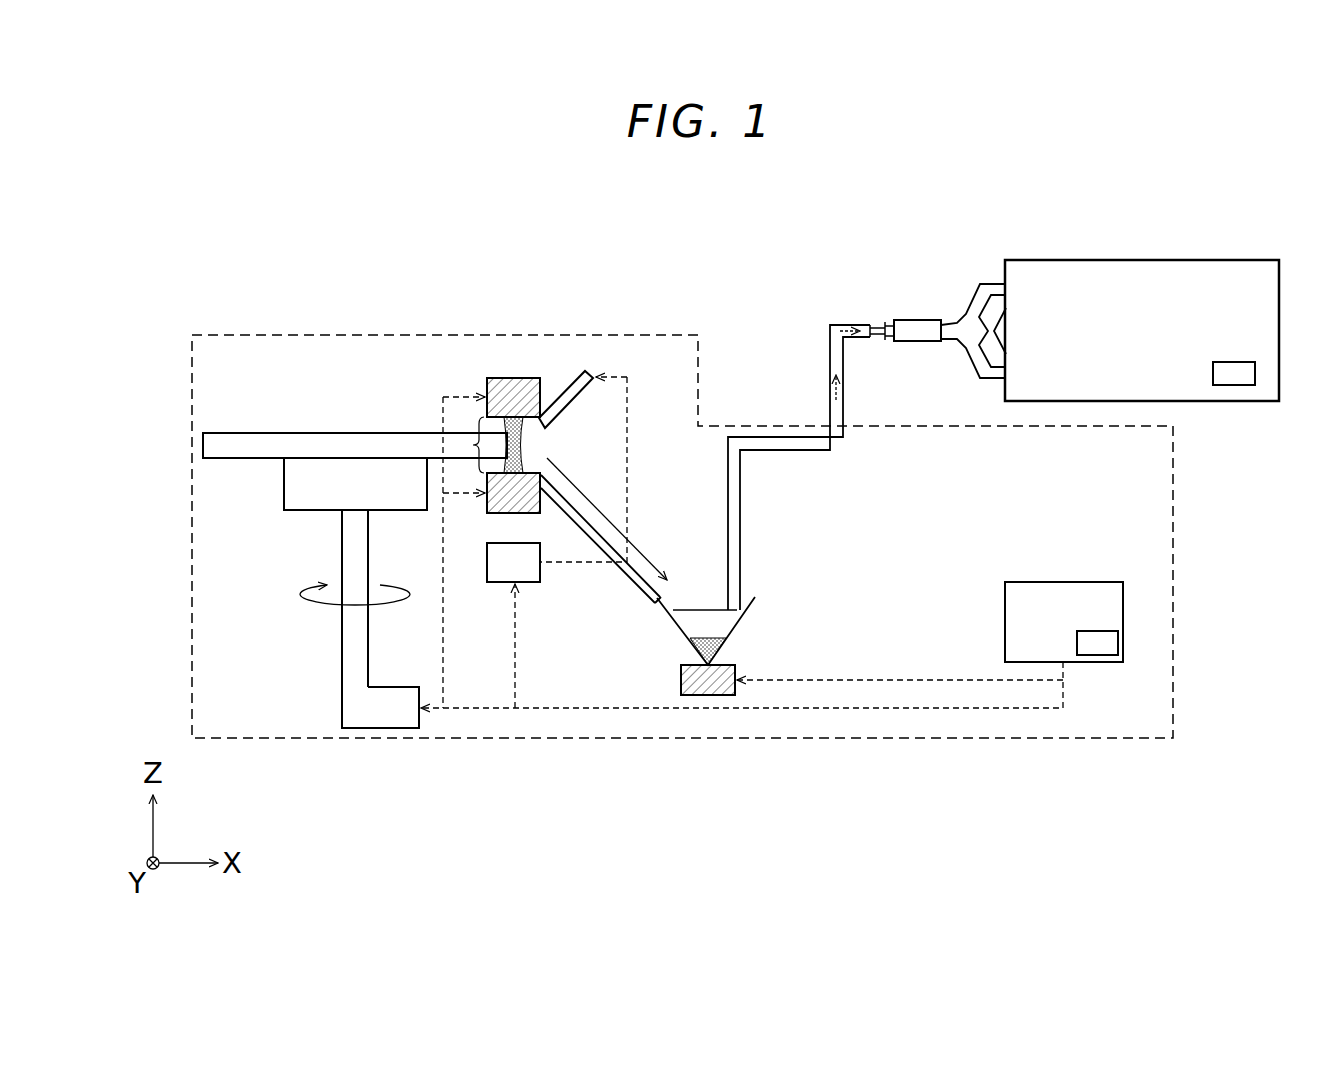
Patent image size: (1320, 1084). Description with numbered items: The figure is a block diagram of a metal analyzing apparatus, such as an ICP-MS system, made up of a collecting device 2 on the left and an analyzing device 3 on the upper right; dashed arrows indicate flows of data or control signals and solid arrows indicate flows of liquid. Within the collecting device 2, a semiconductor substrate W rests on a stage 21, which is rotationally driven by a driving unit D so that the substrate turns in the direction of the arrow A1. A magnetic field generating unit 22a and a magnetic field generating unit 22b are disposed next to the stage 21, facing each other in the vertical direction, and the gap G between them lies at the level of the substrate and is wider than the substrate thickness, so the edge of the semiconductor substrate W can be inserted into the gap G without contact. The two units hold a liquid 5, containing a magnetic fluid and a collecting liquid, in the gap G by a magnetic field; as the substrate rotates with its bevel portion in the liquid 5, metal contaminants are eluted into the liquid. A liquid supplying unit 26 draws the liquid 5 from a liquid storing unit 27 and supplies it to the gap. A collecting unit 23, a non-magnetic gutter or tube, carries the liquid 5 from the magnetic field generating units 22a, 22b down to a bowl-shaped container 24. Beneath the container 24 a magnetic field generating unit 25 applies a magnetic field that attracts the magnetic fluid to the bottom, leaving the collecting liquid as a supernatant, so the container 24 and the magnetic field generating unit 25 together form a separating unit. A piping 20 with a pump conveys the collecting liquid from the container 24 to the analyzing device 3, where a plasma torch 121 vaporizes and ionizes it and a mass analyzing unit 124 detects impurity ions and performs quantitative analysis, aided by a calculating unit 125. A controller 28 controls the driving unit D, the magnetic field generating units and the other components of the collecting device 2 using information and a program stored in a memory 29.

The collecting device 2 is at (190, 552).
The analyzing device 3 is at (1174, 241).
The liquid 5 is at (528, 441).
The piping 20 is at (834, 453).
The stage 21 is at (302, 510).
The magnetic field generating unit 22a is at (506, 380).
The magnetic field generating unit 22b is at (520, 514).
The collecting unit 23 is at (632, 580).
The container 24 is at (672, 618).
The magnetic field generating unit 25 is at (681, 680).
The liquid supplying unit 26 is at (562, 390).
The liquid storing unit 27 is at (530, 575).
The controller 28 is at (1070, 582).
The memory 29 is at (1103, 657).
The plasma torch 121 is at (915, 320).
The mass analyzing unit 124 is at (1053, 260).
The calculating unit 125 is at (1232, 387).
The semiconductor substrate W is at (355, 445).
The gap G is at (465, 445).
The driving unit D is at (398, 729).
The arrow A1 is at (354, 612).